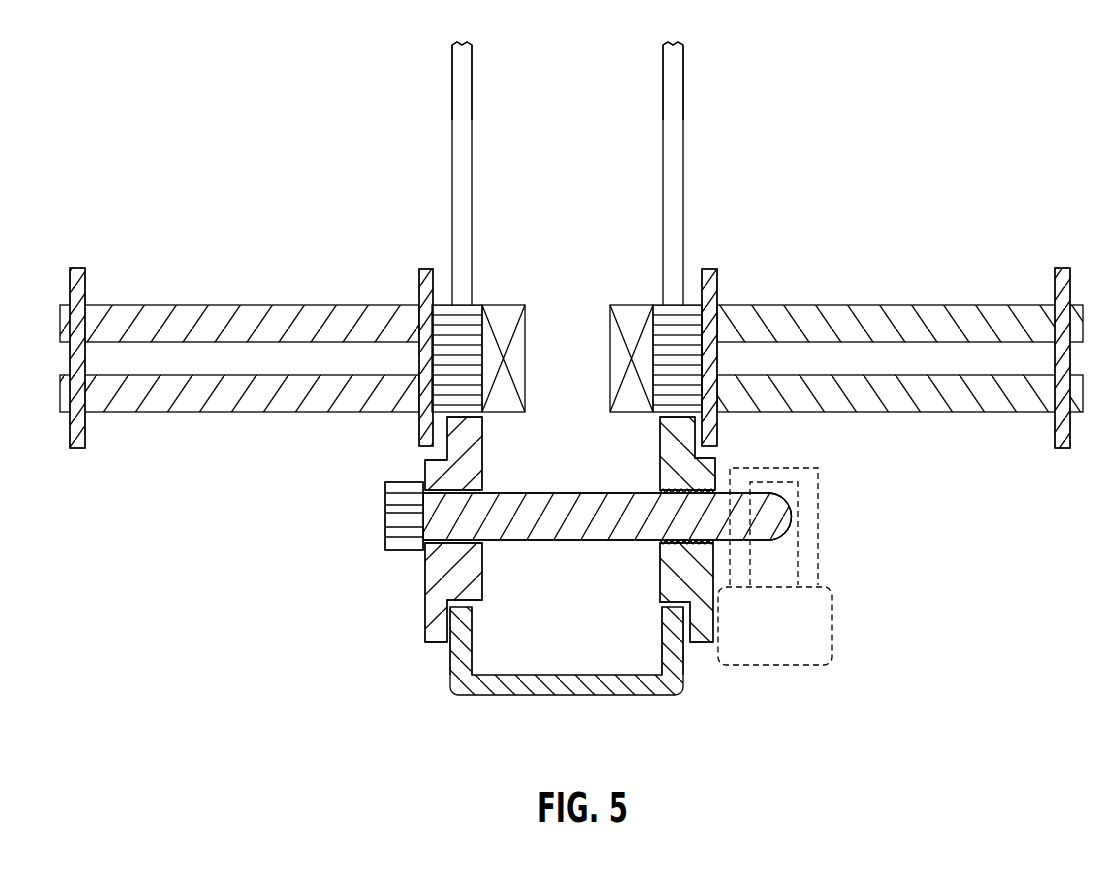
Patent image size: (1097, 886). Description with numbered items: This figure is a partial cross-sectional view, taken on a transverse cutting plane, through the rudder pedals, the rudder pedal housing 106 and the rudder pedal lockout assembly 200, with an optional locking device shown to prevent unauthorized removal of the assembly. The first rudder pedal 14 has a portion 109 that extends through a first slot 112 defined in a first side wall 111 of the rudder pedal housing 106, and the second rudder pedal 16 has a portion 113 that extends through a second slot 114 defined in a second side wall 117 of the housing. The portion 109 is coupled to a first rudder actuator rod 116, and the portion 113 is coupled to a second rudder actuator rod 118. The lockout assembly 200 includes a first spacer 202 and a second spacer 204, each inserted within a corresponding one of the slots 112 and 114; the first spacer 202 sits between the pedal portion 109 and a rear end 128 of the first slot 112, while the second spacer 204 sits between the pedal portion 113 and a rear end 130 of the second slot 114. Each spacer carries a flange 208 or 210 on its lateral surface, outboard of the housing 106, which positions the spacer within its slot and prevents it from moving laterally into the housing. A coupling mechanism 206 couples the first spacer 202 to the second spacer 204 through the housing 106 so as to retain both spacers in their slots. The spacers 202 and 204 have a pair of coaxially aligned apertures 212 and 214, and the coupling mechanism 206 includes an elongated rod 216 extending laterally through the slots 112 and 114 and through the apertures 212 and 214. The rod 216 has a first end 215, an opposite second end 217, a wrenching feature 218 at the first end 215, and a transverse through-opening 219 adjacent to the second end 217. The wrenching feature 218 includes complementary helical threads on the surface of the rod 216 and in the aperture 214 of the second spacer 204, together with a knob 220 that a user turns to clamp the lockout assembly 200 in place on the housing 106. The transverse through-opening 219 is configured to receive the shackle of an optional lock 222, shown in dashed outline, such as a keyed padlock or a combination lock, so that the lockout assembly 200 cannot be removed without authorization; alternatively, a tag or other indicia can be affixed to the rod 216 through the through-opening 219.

The first rudder pedal 14 is at (238, 412).
The second rudder pedal 16 is at (930, 412).
The rudder pedal housing 106 is at (600, 690).
The portion of the first rudder pedal 109 is at (453, 330).
The first side wall 111 is at (451, 70).
The first slot 112 is at (460, 158).
The portion of the second rudder pedal 113 is at (682, 330).
The second slot 114 is at (672, 178).
The first rudder actuator rod 116 is at (504, 303).
The second side wall 117 is at (685, 68).
The second rudder actuator rod 118 is at (638, 303).
The rear end of the first slot 128 is at (470, 610).
The rear end of the second slot 130 is at (665, 620).
The rudder pedal lockout assembly 200 is at (285, 655).
The first spacer 202 is at (462, 580).
The second spacer 204 is at (672, 578).
The coupling mechanism 206 is at (584, 470).
The flange of the first spacer 208 is at (432, 615).
The flange of the second spacer 210 is at (700, 645).
The aperture of the first spacer 212 is at (500, 490).
The aperture of the second spacer 214 is at (660, 490).
The first end of the rod 215 is at (417, 527).
The elongated rod 216 is at (497, 543).
The second end of the rod 217 is at (792, 517).
The wrenching feature 218 is at (668, 548).
The transverse through-opening 219 is at (745, 503).
The knob 220 is at (410, 505).
The lock 222 is at (808, 628).